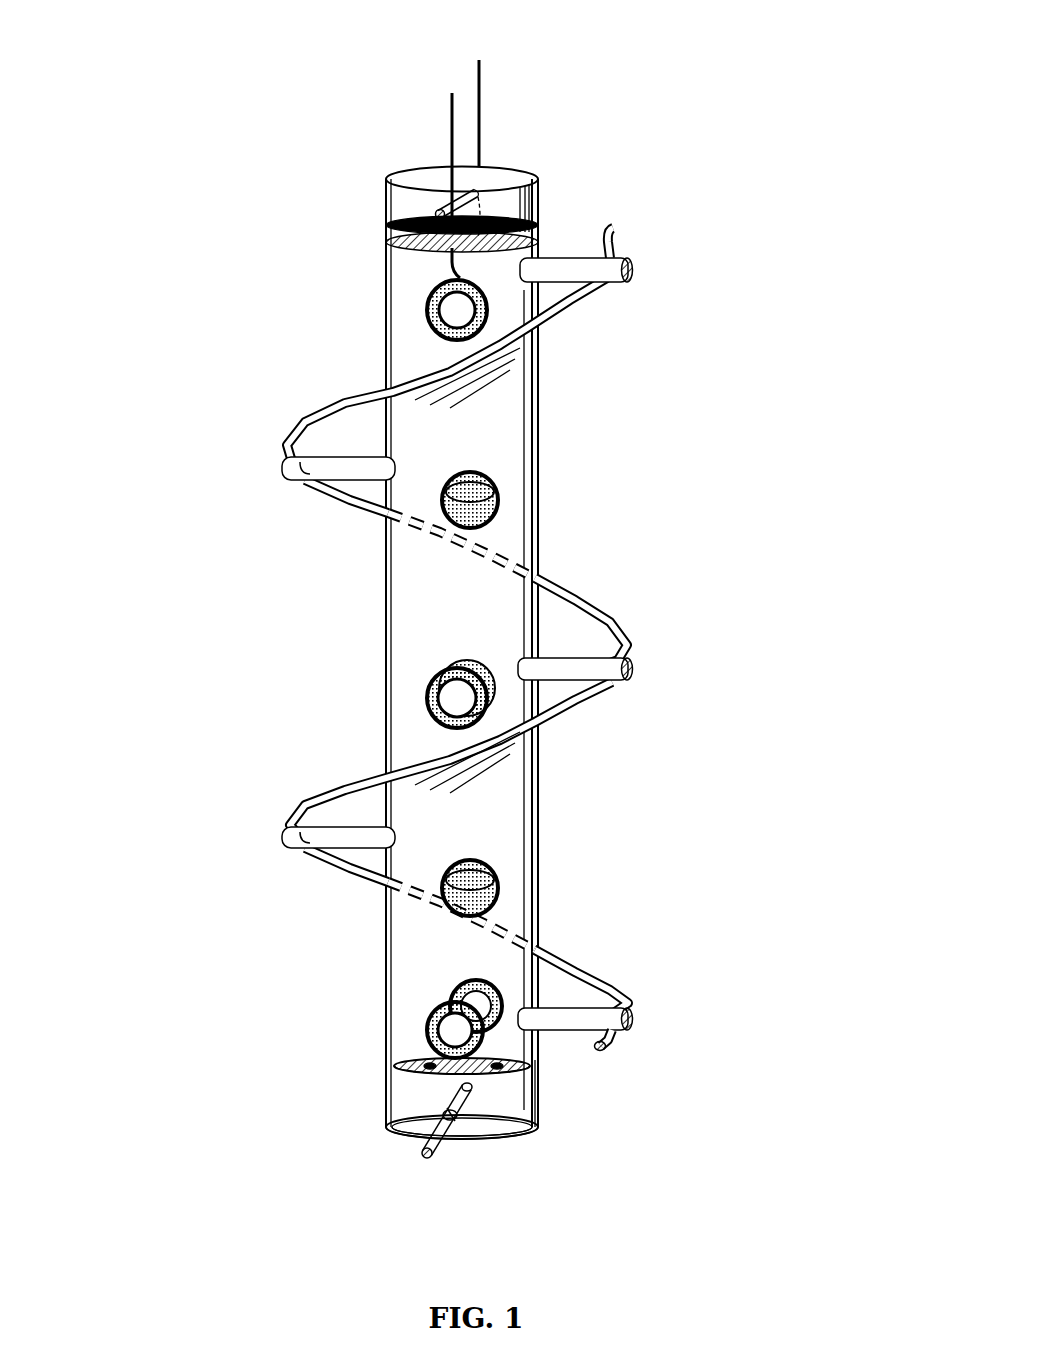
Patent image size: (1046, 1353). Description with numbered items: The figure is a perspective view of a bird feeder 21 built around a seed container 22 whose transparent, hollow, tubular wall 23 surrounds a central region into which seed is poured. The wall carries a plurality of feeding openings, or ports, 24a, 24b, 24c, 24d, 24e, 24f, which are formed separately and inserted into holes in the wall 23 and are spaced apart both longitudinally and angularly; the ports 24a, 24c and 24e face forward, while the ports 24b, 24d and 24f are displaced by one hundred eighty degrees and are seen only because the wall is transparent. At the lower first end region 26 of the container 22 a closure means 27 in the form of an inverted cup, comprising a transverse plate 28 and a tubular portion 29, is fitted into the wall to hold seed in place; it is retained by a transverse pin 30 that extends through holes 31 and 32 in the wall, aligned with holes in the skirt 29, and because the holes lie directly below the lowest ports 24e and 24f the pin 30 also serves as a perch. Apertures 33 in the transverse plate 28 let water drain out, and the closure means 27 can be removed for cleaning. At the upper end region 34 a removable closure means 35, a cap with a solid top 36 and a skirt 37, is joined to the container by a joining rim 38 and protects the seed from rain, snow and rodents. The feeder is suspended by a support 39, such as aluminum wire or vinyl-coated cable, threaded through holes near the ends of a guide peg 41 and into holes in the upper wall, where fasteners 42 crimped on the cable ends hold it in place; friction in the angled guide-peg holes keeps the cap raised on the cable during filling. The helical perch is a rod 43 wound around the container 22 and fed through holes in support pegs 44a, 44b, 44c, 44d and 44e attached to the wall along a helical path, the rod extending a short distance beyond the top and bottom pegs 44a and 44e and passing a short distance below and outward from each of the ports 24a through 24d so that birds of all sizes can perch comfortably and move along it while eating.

The bird feeder 21 is at (300, 152).
The seed container 22 is at (568, 458).
The tubular wall 23 is at (540, 772).
The feeding opening 24a is at (440, 340).
The feeding opening 24b is at (458, 528).
The feeding opening 24c is at (445, 672).
The feeding opening 24d is at (500, 885).
The feeding opening 24e is at (447, 1005).
The feeding opening 24f is at (490, 1000).
The first end region 26 is at (392, 1118).
The closure means 27 is at (476, 1165).
The transverse plate 28 is at (395, 1068).
The tubular portion 29 is at (545, 1096).
The transverse pin 30 is at (425, 1155).
The hole 31 is at (465, 1102).
The hole 32 is at (455, 1120).
The apertures 33 is at (420, 1058).
The other end region 34 is at (388, 290).
The removable closure means 35 is at (498, 175).
The solid top 36 is at (494, 135).
The skirt 37 is at (540, 192).
The joining rim 38 is at (545, 241).
The support 39 is at (448, 110).
The guide peg 41 is at (447, 204).
The fasteners 42 is at (470, 348).
The rod 43 is at (588, 598).
The support peg 44a is at (634, 270).
The support peg 44b is at (280, 474).
The support peg 44c is at (636, 670).
The support peg 44d is at (283, 843).
The support peg 44e is at (636, 1020).